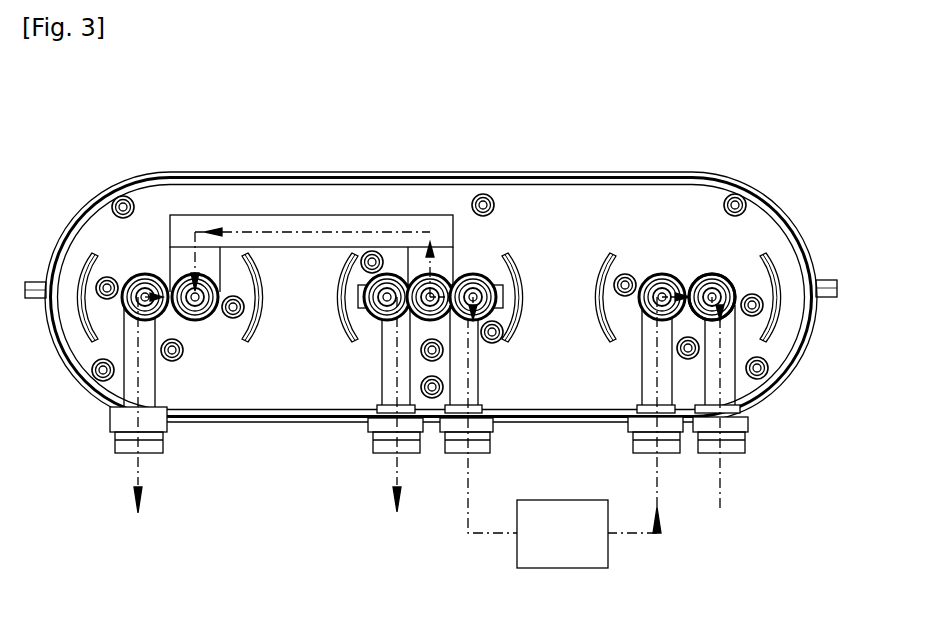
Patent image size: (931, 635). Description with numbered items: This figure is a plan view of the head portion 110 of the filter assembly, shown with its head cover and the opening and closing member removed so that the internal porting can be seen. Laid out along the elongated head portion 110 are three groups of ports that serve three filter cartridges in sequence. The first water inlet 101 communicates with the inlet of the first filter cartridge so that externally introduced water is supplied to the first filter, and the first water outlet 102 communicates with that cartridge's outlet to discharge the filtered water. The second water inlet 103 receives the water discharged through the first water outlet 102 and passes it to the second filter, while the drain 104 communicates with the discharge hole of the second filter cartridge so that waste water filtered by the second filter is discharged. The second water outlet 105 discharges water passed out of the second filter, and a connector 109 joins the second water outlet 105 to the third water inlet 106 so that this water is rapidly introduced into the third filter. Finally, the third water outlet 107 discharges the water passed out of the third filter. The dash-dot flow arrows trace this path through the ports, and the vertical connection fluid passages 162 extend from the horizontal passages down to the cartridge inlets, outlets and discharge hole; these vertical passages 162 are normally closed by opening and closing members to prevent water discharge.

The first water inlet 101 is at (738, 453).
The first water outlet 102 is at (667, 453).
The second water inlet 103 is at (458, 453).
The drain 104 is at (382, 453).
The second water outlet 105 is at (438, 245).
The third water inlet 106 is at (185, 274).
The third water outlet 107 is at (155, 453).
The connector 109 is at (315, 215).
The head portion 110 is at (628, 172).
The vertical connection fluid passages 162 is at (727, 270).